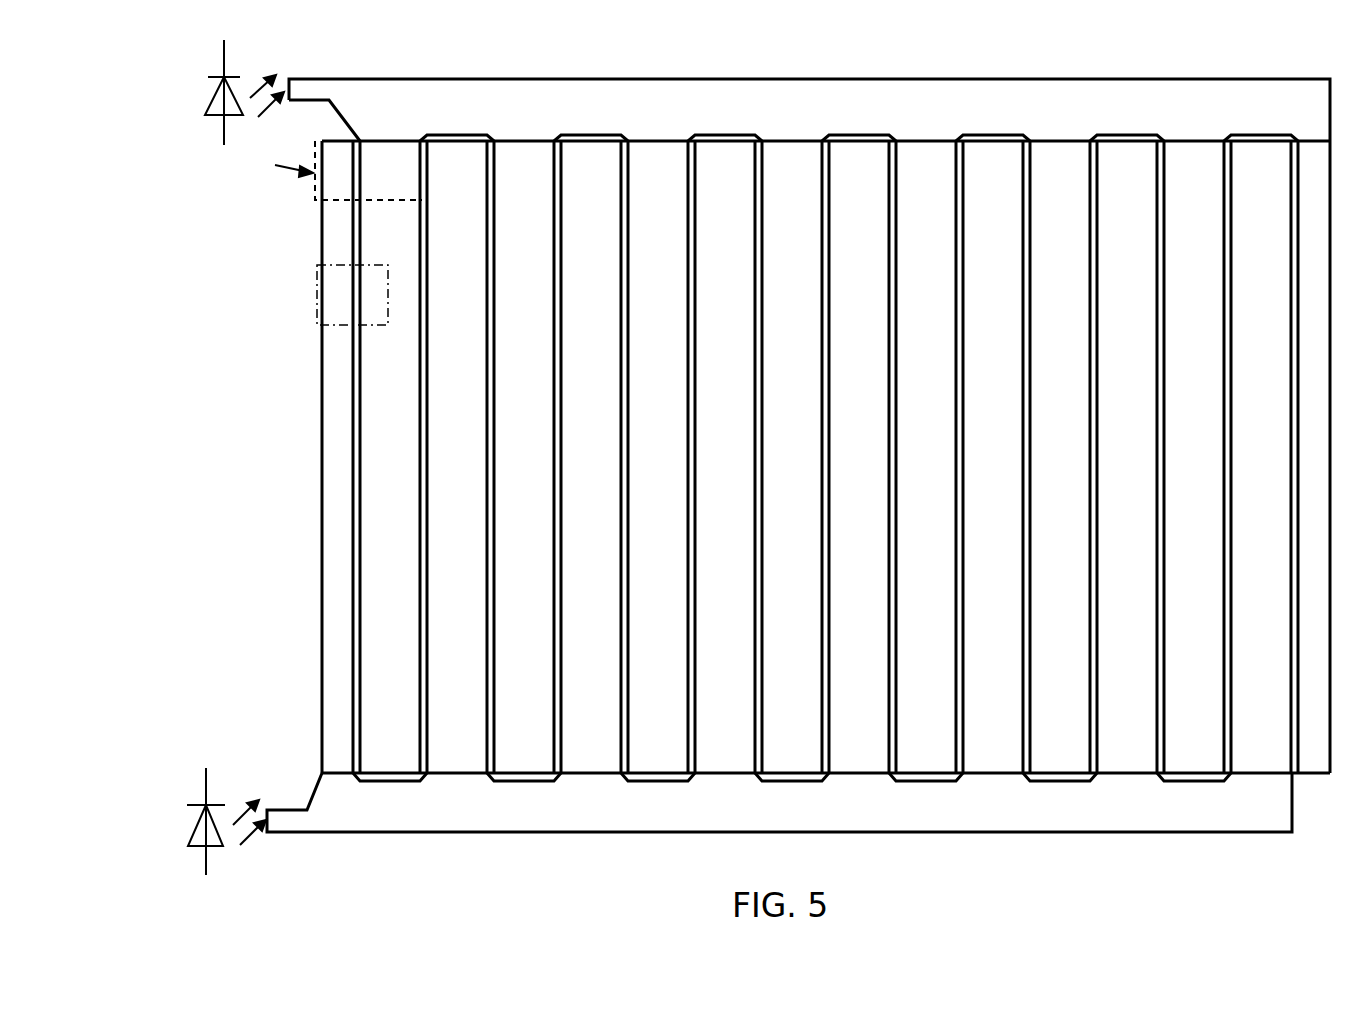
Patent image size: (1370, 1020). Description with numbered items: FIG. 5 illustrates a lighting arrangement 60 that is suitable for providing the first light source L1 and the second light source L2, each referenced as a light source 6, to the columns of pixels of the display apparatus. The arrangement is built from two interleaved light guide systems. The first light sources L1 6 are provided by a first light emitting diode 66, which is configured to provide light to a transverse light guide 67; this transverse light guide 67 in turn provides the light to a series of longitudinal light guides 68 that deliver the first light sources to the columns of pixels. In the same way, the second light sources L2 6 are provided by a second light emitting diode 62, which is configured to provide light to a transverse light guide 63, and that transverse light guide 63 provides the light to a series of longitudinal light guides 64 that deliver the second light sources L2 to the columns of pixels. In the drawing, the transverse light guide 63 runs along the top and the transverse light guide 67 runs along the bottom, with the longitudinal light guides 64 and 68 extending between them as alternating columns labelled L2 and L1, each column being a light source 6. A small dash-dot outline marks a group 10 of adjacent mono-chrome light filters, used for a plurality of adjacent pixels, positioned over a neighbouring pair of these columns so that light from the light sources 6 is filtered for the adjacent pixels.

The lighting arrangement 60 is at (725, 461).
The second light emitting diode 62 is at (213, 77).
The transverse light guide 63 is at (553, 79).
The longitudinal light guides 64 is at (385, 165).
The first light emitting diode 66 is at (198, 805).
The transverse light guide 67 is at (318, 800).
The longitudinal light guides 68 is at (321, 692).
The light source 6 is at (816, 463).
The group of adjacent mono-chrome light filters 10 is at (312, 284).